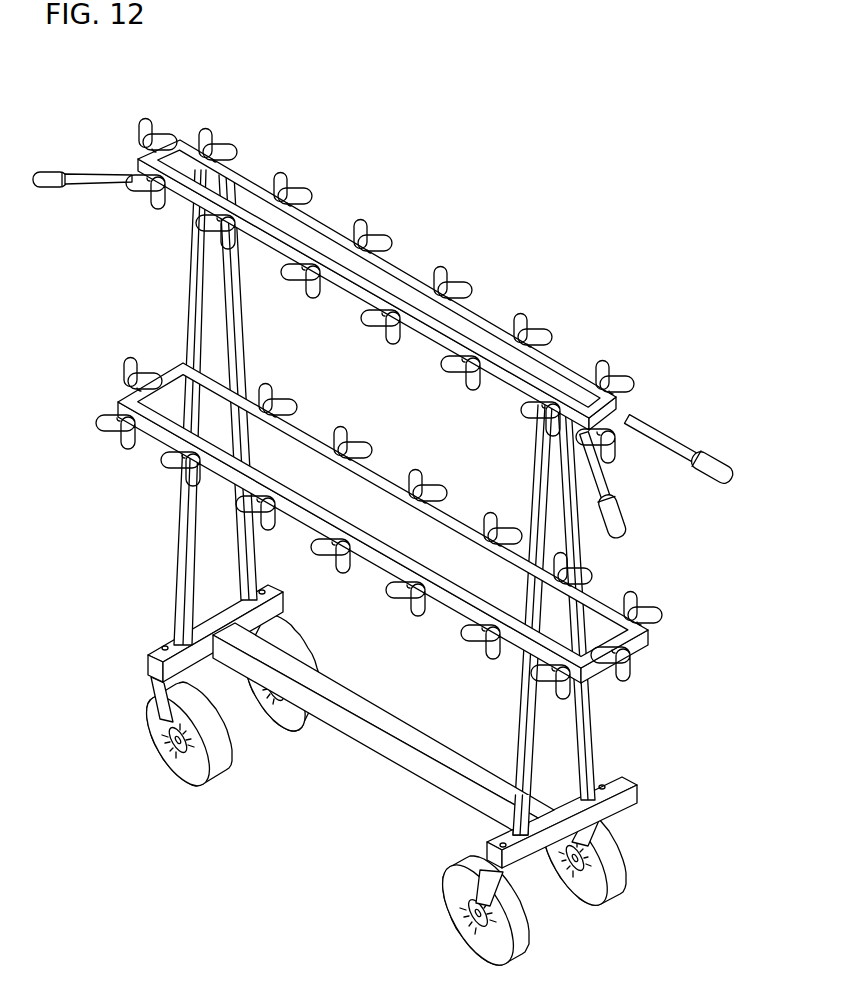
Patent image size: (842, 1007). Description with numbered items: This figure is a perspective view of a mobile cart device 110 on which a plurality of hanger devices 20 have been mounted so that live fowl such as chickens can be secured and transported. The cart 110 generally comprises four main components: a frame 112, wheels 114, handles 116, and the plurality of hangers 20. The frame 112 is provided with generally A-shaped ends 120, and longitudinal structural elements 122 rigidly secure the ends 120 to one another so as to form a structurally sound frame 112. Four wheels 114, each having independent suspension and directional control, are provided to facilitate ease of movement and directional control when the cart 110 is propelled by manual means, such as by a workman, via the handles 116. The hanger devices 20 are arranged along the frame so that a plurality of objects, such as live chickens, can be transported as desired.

The hanger device 20 is at (270, 124).
The mobile cart device 110 is at (433, 171).
The frame 112 is at (624, 802).
The wheels 114 is at (145, 736).
The handles 116 is at (98, 184).
The A-shaped ends 120 is at (596, 745).
The longitudinal structural elements 122 is at (183, 203).